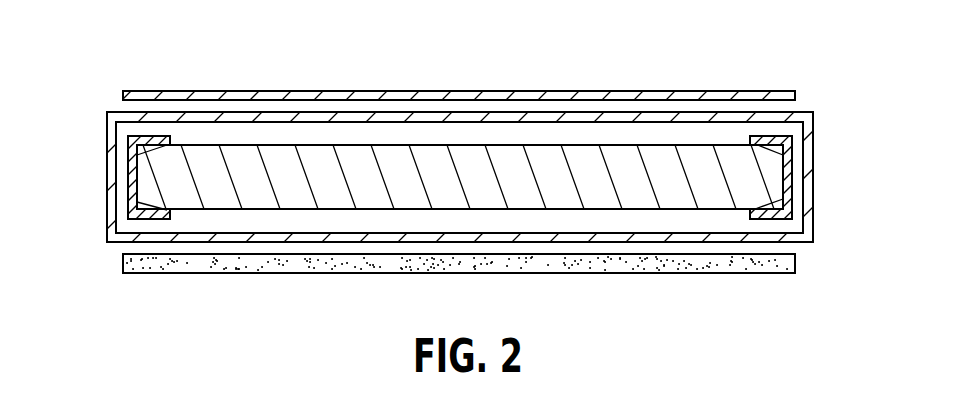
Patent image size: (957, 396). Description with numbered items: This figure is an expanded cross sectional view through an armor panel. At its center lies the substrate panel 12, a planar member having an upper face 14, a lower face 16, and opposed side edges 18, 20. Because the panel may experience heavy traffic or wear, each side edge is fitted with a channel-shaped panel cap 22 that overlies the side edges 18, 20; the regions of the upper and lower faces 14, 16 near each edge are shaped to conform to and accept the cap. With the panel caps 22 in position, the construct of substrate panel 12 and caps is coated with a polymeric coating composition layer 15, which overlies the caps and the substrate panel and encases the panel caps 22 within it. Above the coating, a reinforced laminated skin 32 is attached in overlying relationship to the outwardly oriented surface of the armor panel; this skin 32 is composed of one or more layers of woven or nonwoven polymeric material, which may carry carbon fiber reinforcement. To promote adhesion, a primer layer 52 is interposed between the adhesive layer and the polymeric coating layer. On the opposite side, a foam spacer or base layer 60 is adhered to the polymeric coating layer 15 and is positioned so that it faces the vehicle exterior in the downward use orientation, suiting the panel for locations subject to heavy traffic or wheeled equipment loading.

The substrate panel 12 is at (752, 179).
The upper face 14 is at (732, 145).
The polymeric coating composition layer 15 is at (800, 112).
The lower face 16 is at (647, 209).
The side edge 18 is at (790, 158).
The side edge 20 is at (135, 175).
The panel cap 22 is at (797, 178).
The reinforced laminated skin 32 is at (640, 93).
The primer layer 52 is at (780, 112).
The foam spacer layer 60 is at (453, 265).